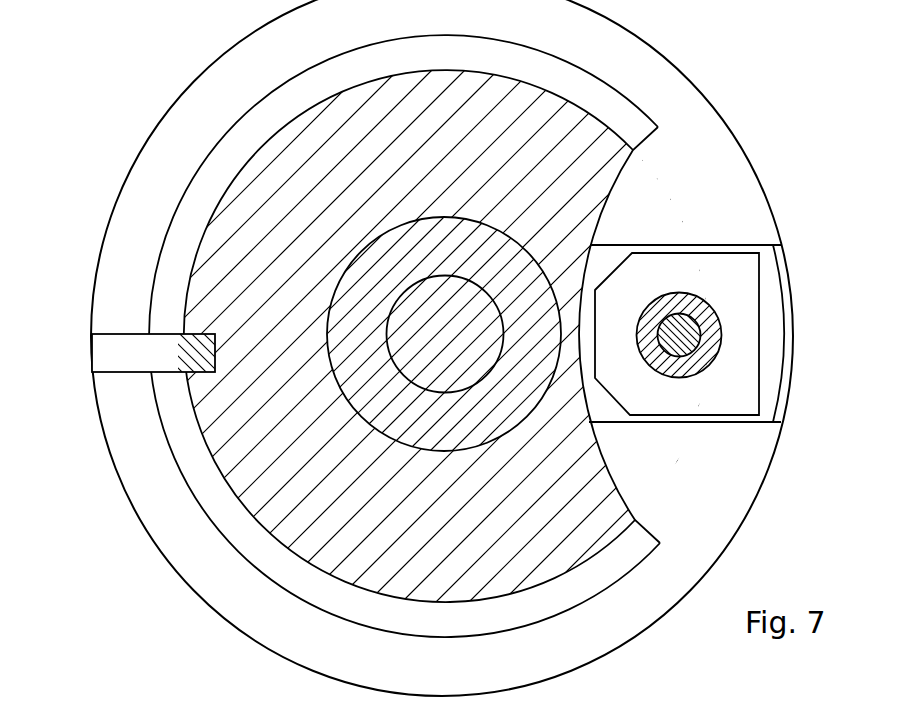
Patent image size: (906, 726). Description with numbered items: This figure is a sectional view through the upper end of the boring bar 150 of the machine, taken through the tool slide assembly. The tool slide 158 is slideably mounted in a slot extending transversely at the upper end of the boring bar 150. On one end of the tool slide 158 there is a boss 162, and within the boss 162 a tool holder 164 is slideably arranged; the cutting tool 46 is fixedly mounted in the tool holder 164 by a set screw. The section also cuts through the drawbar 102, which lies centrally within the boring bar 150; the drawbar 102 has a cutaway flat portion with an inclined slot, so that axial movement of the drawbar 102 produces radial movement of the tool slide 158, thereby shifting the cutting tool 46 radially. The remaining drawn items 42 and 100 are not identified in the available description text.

The tab 42 is at (195, 368).
The cutting tool 46 is at (673, 320).
The hub 100 is at (513, 247).
The drawbar 102 is at (462, 387).
The boring bar 150 is at (635, 116).
The tool slide 158 is at (770, 263).
The boss 162 is at (748, 327).
The tool holder 164 is at (697, 303).